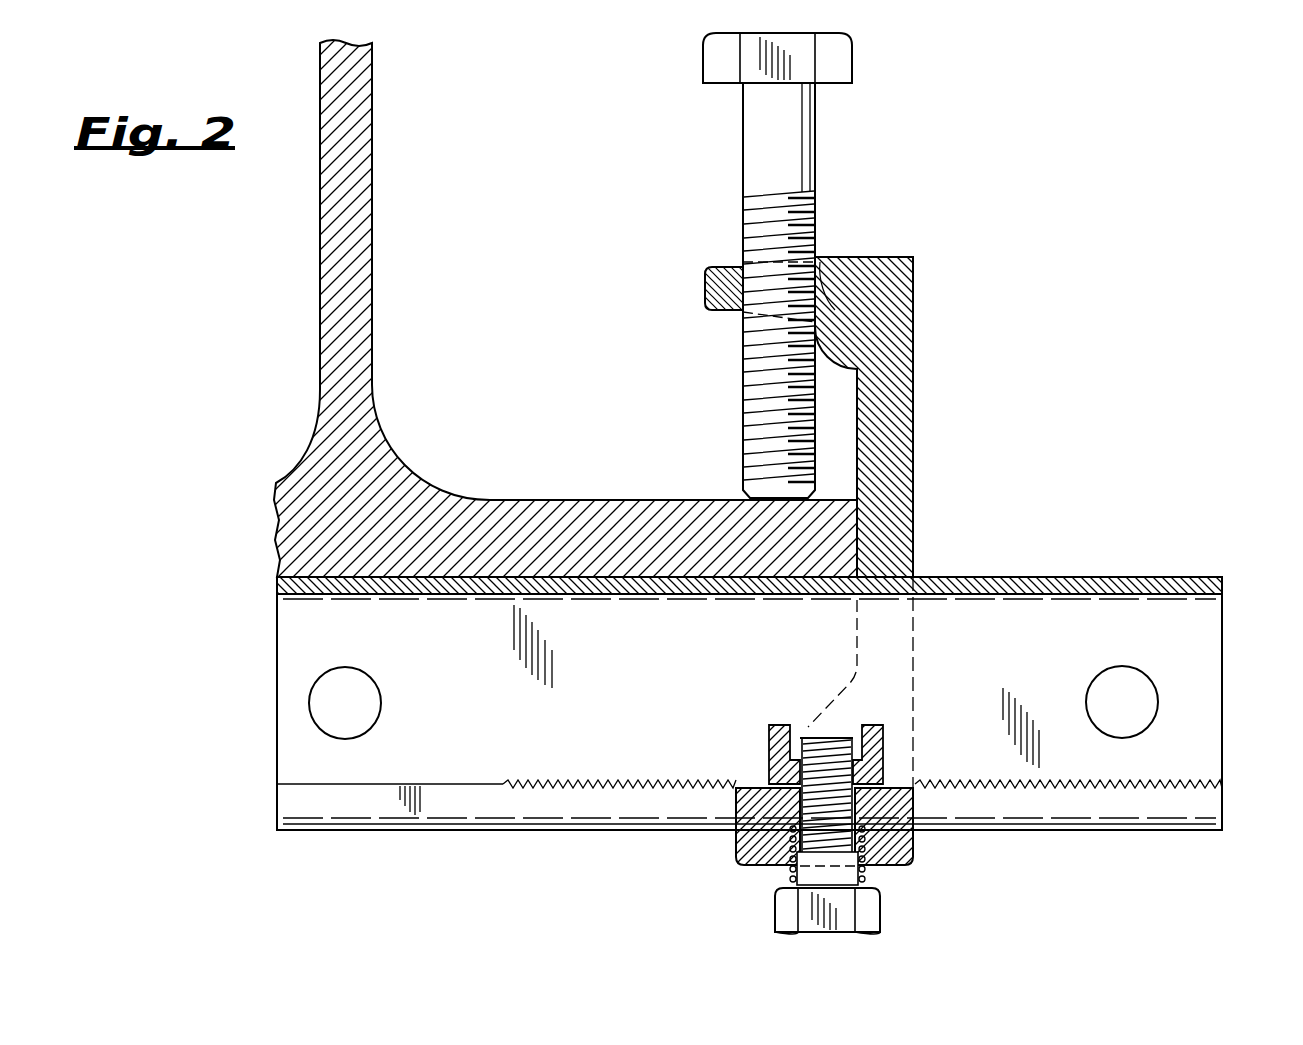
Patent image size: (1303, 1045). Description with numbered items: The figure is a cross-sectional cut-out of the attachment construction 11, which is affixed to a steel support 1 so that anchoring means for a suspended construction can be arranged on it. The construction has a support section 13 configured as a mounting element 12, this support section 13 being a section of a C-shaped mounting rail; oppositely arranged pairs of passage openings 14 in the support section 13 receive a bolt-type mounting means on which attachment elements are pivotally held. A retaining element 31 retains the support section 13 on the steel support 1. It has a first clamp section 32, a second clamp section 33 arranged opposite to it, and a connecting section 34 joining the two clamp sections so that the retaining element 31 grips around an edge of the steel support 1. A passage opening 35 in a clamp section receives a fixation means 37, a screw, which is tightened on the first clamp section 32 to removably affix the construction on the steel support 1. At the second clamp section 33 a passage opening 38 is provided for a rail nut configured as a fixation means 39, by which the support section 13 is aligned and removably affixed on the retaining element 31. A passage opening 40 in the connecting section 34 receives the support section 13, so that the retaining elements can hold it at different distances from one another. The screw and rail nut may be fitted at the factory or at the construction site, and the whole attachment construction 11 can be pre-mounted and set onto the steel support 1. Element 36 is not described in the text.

The steel support 1 is at (357, 249).
The attachment construction 11 is at (1105, 226).
The mounting element 12 is at (1190, 576).
The support section 13 is at (1085, 577).
The passage openings 14 is at (360, 700).
The retaining element 31 is at (906, 522).
The first clamp section 32 is at (723, 290).
The second clamp section 33 is at (758, 850).
The connecting section 34 is at (888, 419).
The passage opening 35 is at (758, 258).
The threaded bore 36 is at (812, 266).
The fixation means 37 is at (771, 265).
The passage opening 38 is at (865, 868).
The fixation means 39 is at (790, 912).
The passage opening 40 is at (878, 572).